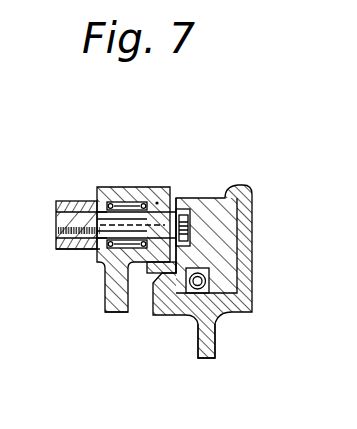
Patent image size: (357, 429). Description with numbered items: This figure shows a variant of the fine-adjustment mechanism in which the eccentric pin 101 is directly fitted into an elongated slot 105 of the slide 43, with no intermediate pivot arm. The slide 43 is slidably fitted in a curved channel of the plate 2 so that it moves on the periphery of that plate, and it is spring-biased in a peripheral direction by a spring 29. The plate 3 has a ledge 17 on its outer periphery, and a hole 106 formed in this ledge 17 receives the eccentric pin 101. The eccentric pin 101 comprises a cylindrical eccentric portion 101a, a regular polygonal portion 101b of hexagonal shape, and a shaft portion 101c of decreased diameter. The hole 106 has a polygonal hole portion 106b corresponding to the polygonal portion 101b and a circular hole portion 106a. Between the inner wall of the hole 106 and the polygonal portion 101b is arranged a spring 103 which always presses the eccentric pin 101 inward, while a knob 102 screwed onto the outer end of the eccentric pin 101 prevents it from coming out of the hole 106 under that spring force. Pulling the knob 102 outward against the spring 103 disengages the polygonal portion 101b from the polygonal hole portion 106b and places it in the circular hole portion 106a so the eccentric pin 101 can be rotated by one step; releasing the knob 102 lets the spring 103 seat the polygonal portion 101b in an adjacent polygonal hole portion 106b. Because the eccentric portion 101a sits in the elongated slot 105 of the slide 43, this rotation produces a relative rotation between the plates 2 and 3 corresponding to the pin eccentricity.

The plate 2 is at (233, 314).
The plate 3 is at (106, 314).
The ledge 17 is at (103, 187).
The spring 29 is at (195, 294).
The slide 43 is at (224, 217).
The eccentric pin 101 is at (152, 240).
The cylindrical eccentric portion 101a is at (190, 232).
The regular polygonal portion 101b is at (163, 213).
The shaft portion 101c is at (73, 251).
The knob 102 is at (65, 202).
The spring 103 is at (147, 185).
The elongated slot 105 is at (183, 208).
The hole 106 is at (112, 286).
The circular hole portion 106a is at (117, 203).
The polygonal hole portion 106b is at (172, 196).